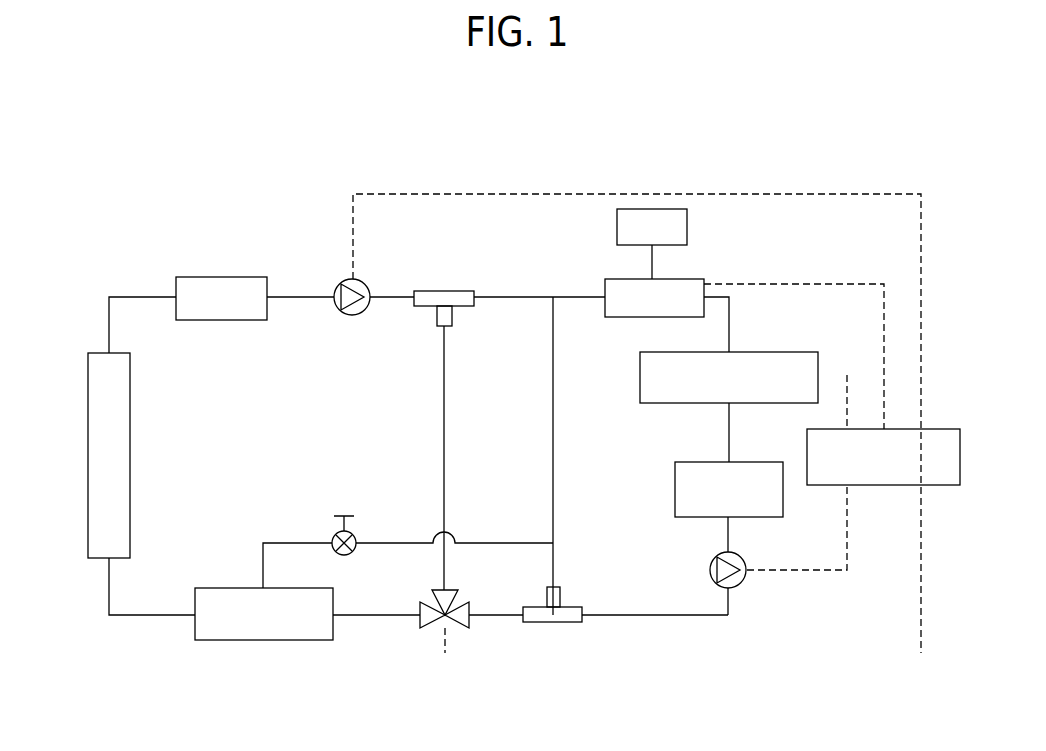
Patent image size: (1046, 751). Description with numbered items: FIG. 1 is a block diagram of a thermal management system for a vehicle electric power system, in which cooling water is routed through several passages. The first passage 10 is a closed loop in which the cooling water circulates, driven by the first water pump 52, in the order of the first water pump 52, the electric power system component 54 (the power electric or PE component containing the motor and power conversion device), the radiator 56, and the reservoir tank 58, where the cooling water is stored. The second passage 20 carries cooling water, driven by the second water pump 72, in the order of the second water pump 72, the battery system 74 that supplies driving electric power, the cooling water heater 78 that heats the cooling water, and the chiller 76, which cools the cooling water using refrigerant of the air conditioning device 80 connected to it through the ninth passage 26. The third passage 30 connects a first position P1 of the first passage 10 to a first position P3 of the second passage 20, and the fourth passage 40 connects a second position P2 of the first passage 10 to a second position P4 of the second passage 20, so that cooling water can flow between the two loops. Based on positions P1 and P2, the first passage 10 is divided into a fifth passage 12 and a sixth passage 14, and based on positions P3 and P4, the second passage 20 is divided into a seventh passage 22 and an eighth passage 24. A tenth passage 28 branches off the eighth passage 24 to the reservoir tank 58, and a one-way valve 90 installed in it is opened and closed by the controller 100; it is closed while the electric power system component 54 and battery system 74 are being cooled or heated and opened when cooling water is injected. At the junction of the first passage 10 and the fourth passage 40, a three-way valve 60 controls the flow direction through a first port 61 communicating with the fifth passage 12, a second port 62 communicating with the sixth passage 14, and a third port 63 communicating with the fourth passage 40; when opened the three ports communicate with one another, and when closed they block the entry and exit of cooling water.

The first passage 10 is at (377, 412).
The fifth passage 12 is at (300, 299).
The sixth passage 14 is at (444, 378).
The second passage 20 is at (713, 681).
The seventh passage 22 is at (697, 617).
The eighth passage 24 is at (553, 559).
The ninth passage 26 is at (652, 262).
The tenth passage 28 is at (265, 543).
The third passage 30 is at (497, 297).
The fourth passage 40 is at (497, 617).
The first water pump 52 is at (340, 282).
The electric power system component 54 is at (220, 277).
The radiator 56 is at (100, 353).
The reservoir tank 58 is at (262, 640).
The three-way valve 60 is at (445, 578).
The first port 61 is at (422, 622).
The second port 62 is at (432, 595).
The third port 63 is at (465, 600).
The second water pump 72 is at (745, 582).
The battery system 74 is at (675, 490).
The chiller 76 is at (605, 312).
The cooling water heater 78 is at (775, 352).
The air conditioning device 80 is at (687, 223).
The one-way valve 90 is at (335, 525).
The controller 100 is at (885, 485).
The first position of the first passage P1 is at (447, 291).
The second position of the first passage P2 is at (445, 636).
The first position of the second passage P3 is at (553, 297).
The second position of the second passage P4 is at (553, 622).